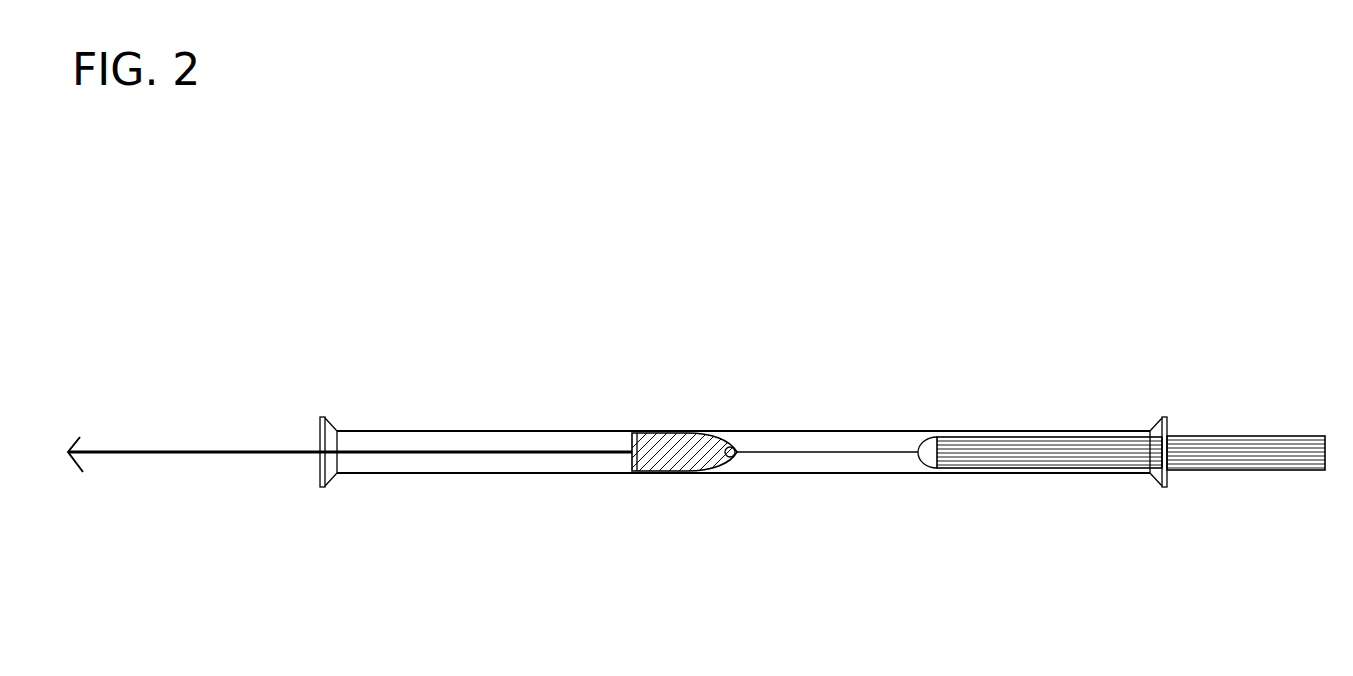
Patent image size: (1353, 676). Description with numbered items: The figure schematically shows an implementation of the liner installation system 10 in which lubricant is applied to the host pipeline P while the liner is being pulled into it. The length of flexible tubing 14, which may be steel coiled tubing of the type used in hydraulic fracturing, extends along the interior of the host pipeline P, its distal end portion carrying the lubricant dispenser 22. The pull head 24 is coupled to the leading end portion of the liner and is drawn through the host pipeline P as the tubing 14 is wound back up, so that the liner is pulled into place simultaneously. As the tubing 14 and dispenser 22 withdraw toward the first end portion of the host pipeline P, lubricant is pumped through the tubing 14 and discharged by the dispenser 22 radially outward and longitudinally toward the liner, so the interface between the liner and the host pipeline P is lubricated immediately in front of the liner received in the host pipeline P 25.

The liner installation system 10 is at (1307, 434).
The flexible tubing 14 is at (448, 456).
The lubricant dispenser 22 is at (727, 433).
The pull head 24 is at (663, 476).
The plunger 25 is at (997, 471).
The host pipeline P is at (855, 432).